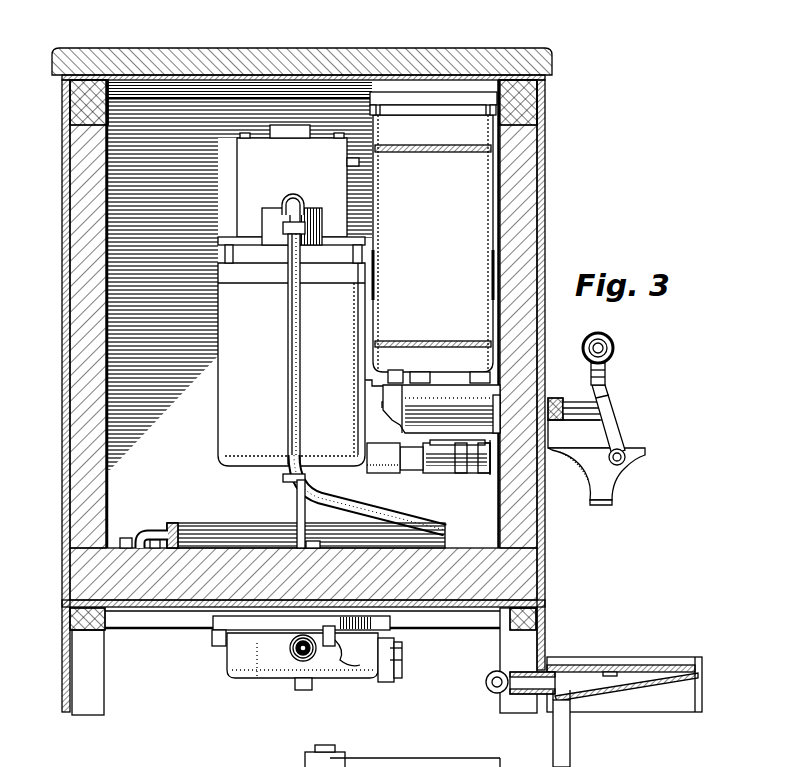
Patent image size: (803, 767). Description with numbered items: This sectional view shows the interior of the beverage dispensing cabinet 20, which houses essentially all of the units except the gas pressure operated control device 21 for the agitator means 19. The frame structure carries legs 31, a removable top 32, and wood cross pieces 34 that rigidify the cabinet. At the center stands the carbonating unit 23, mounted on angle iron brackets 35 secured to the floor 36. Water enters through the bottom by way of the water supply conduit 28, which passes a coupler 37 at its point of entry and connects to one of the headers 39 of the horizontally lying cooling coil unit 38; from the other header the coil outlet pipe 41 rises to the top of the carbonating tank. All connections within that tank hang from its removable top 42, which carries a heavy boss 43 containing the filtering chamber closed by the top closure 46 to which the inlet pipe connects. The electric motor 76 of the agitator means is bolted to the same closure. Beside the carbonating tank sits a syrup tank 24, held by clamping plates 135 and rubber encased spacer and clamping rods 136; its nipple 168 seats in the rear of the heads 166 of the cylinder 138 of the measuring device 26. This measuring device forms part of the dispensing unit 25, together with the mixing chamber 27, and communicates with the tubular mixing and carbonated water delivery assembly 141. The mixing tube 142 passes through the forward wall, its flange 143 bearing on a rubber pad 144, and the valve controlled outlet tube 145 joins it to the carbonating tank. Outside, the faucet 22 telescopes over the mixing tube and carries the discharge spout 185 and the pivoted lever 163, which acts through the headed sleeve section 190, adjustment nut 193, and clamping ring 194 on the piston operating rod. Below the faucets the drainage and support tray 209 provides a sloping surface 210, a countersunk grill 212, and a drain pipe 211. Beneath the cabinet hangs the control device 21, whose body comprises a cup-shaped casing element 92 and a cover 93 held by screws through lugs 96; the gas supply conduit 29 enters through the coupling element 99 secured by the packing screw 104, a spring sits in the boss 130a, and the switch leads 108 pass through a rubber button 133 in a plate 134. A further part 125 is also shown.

The cabinet 20 is at (62, 379).
The removable top 32 is at (146, 49).
The cross pieces 34 is at (80, 106).
The legs 31 is at (90, 700).
The electric motor 76 is at (298, 181).
The agitator means 19 is at (348, 200).
The carbonating unit 23 is at (291, 351).
The heavy boss 43 is at (262, 220).
The top closure 46 is at (282, 207).
The removable top 42 is at (330, 283).
The coil outlet pipe 41 is at (288, 412).
The syrup tank 24 is at (433, 238).
The spacer and clamping rods 136 is at (434, 152).
The clamping plates 135 is at (376, 274).
The nipple 168 is at (398, 370).
The cylinder 138 is at (426, 383).
The heads 166 is at (478, 383).
The measuring device 26 is at (441, 409).
The mixing chamber 27 is at (478, 475).
The dispensing unit 25 is at (448, 476).
The mixing and carbonated water delivery assembly 141 is at (407, 476).
The valve controlled outlet tube 145 is at (375, 476).
The mixing tube 142 is at (462, 476).
The flange 143 is at (488, 478).
The rubber pad 144 is at (494, 478).
The headers 39 is at (224, 540).
The cooling coil unit 38 is at (199, 521).
The water supply conduit 28 is at (150, 530).
The coupler 37 is at (126, 538).
The floor 36 is at (176, 523).
The angle iron brackets 35 is at (297, 509).
The gas pressure operated control device 21 is at (226, 673).
The cover 93 is at (213, 640).
The packing screw 104 is at (290, 647).
The coupling element 99 is at (297, 655).
The gas supply conduit 29 is at (329, 646).
The lugs 96 is at (337, 652).
The side block 125 is at (381, 680).
The plate 134 is at (402, 668).
The rubber button 133 is at (395, 650).
The leads 108 is at (403, 660).
The cup-shaped casing element 92 is at (257, 678).
The boss 130a is at (304, 690).
The faucet 22 is at (612, 371).
The adjustment nut 193 is at (556, 398).
The headed sleeve section 190 is at (584, 421).
The clamping ring 194 is at (582, 395).
The lever 163 is at (623, 426).
The discharge spout 185 is at (601, 504).
The drainage and support tray 209 is at (705, 690).
The grill 212 is at (596, 666).
The sloping surface 210 is at (626, 684).
The drain pipe 211 is at (572, 742).